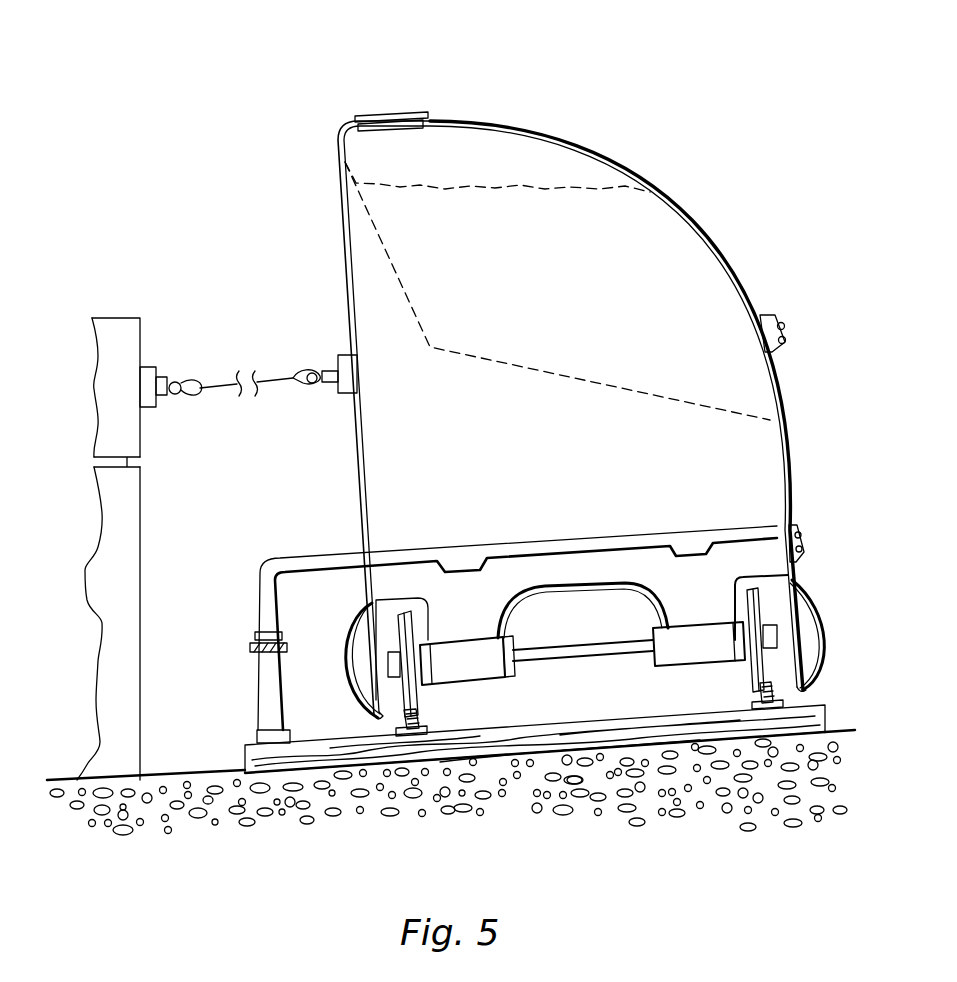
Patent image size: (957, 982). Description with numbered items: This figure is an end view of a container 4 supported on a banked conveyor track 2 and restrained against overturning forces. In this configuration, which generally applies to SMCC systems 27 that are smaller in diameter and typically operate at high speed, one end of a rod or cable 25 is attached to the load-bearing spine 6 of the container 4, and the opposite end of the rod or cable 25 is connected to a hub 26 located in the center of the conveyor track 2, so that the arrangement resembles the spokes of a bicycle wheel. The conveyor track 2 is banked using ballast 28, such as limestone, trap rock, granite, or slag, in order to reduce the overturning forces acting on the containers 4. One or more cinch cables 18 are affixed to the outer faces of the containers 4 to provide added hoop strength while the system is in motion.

The SMCC system 27 is at (479, 82).
The container 4 is at (701, 229).
The cinch cable 18 is at (784, 318).
The load-bearing spine 6 is at (339, 356).
The rod or cable 25 is at (213, 382).
The hub 26 is at (113, 317).
The conveyor track 2 is at (750, 695).
The ballast 28 is at (701, 809).